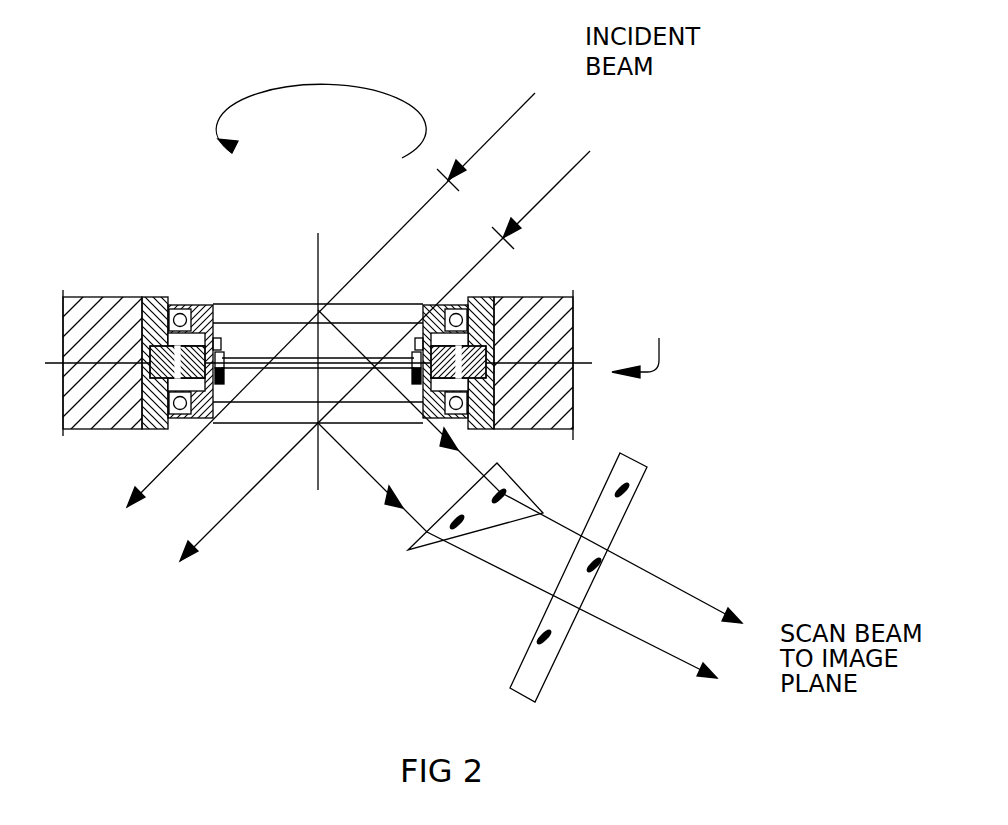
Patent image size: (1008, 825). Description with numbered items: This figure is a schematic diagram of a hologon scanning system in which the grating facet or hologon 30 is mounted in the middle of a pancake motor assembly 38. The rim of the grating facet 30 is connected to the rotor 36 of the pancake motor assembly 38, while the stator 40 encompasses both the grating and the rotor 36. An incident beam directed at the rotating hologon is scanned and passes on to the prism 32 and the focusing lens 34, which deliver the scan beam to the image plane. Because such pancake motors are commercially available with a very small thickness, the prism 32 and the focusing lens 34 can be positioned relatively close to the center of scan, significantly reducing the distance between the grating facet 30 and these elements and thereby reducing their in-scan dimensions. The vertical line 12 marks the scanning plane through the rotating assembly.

The scanning mirror 12 is at (318, 252).
The grating facet 30 is at (247, 357).
The prism 32 is at (512, 500).
The focusing lens 34 is at (610, 530).
The rotor 36 is at (193, 305).
The pancake motor assembly 38 is at (645, 345).
The stator 40 is at (540, 318).